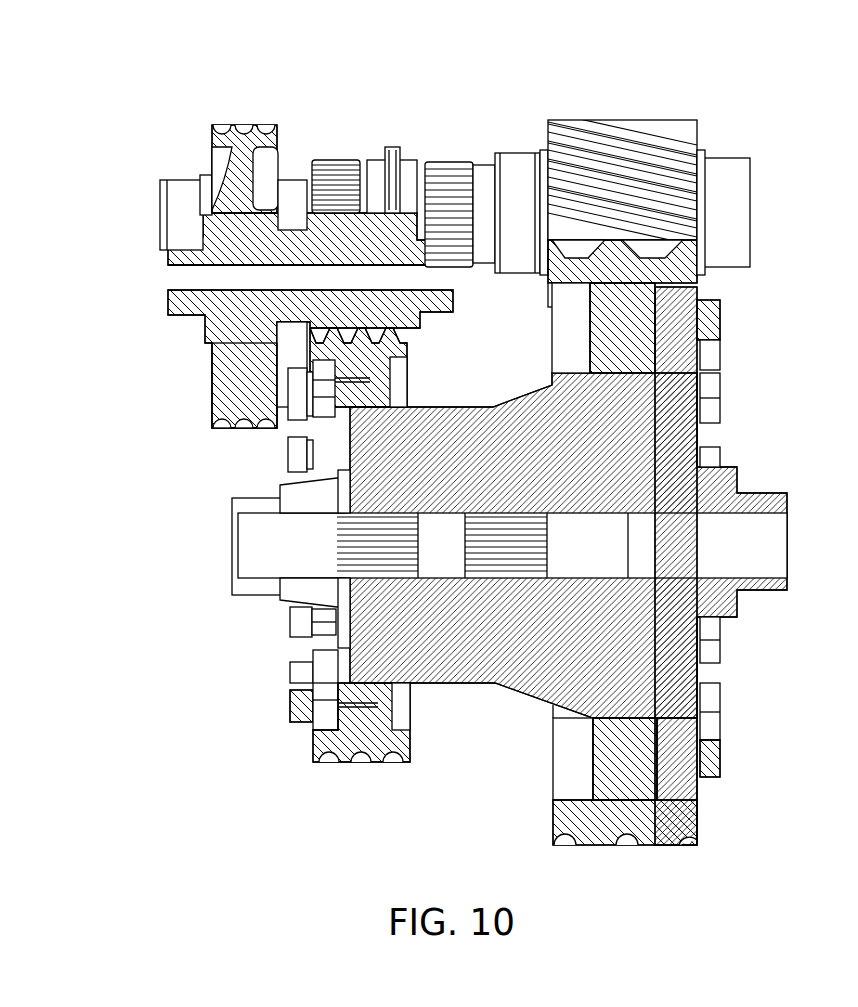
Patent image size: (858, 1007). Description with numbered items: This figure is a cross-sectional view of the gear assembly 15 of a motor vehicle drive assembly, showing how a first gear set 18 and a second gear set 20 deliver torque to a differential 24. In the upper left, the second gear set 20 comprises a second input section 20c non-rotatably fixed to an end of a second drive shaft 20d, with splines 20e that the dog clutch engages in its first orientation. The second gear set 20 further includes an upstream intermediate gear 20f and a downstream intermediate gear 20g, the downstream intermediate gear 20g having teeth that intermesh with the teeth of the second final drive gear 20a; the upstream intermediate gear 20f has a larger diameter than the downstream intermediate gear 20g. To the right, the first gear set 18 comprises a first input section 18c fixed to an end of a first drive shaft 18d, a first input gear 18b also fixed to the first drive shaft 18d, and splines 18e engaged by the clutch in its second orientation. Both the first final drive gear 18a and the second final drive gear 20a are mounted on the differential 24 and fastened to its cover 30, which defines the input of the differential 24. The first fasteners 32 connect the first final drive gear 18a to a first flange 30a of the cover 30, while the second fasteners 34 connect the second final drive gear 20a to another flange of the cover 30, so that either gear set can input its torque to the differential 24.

The gear assembly 15 is at (116, 682).
The first gear set 18 is at (600, 459).
The first final drive gear 18a is at (653, 835).
The first input gear 18b is at (590, 133).
The first input section 18c is at (472, 136).
The first drive shaft 18d is at (725, 178).
The splines 18e is at (453, 175).
The second gear set 20 is at (292, 422).
The second final drive gear 20a is at (385, 748).
The second input section 20c is at (348, 138).
The second drive shaft 20d is at (295, 188).
The splines 20e is at (338, 172).
The upstream intermediate gear 20f is at (240, 410).
The downstream intermediate gear 20g is at (404, 320).
The differential 24 is at (462, 675).
The cover 30 is at (312, 727).
The first flange 30a is at (688, 785).
The first fasteners 32 is at (715, 712).
The second fasteners 34 is at (292, 622).